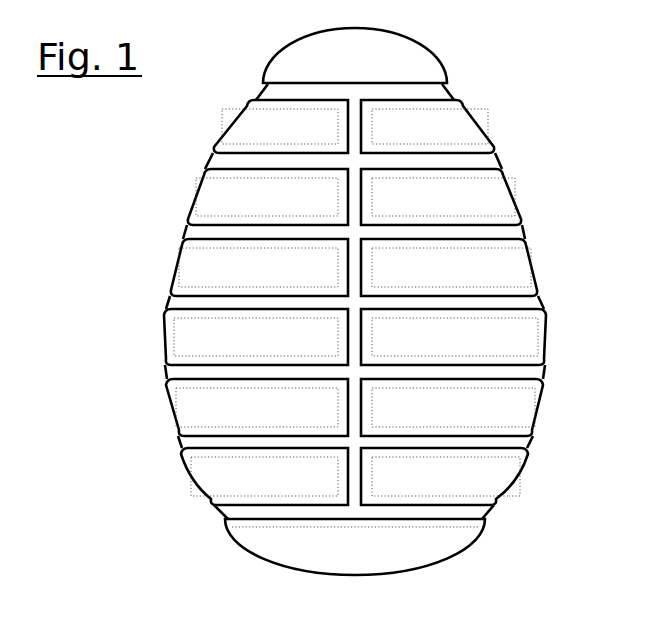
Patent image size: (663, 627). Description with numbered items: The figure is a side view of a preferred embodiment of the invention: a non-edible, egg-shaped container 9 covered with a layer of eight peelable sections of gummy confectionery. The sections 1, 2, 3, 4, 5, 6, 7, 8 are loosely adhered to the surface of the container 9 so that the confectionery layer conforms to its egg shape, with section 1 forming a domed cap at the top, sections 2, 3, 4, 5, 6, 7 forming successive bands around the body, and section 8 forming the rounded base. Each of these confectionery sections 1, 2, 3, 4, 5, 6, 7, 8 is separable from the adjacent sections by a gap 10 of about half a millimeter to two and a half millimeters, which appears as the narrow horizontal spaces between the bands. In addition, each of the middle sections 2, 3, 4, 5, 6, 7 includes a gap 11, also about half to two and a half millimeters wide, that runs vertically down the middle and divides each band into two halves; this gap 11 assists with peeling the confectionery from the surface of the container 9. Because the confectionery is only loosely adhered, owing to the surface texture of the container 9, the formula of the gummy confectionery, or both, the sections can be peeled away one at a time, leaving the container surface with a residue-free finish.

The section of gummy confectionery 1 is at (418, 45).
The section of gummy confectionery 2 is at (485, 121).
The section of gummy confectionery 3 is at (518, 194).
The section of gummy confectionery 4 is at (542, 265).
The section of gummy confectionery 5 is at (550, 338).
The section of gummy confectionery 6 is at (546, 411).
The section of gummy confectionery 7 is at (522, 483).
The section of gummy confectionery 8 is at (450, 560).
The container 9 is at (230, 162).
The gap 10 is at (173, 372).
The gap 11 is at (355, 407).